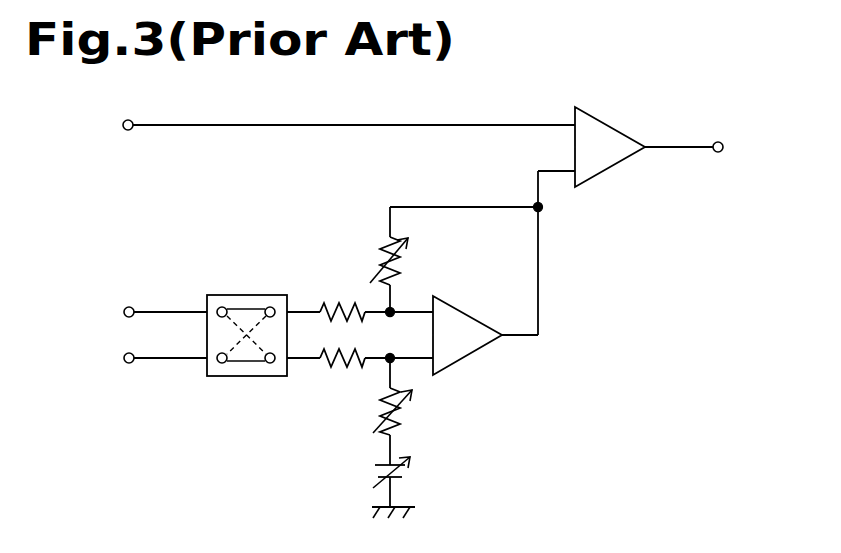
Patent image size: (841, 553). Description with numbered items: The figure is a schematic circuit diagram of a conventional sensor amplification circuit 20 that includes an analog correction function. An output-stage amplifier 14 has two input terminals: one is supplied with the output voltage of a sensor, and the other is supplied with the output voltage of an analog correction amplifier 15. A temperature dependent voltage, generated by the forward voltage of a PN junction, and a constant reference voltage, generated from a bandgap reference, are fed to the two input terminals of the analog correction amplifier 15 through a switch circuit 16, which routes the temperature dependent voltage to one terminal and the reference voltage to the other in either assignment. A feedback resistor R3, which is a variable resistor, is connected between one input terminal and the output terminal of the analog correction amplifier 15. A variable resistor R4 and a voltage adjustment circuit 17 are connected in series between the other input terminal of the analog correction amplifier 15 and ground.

The output-stage amplifier 14 is at (600, 119).
The analog correction amplifier 15 is at (467, 309).
The switch circuit 16 is at (243, 295).
The voltage adjustment circuit 17 is at (405, 460).
The sensor amplification circuit 20 is at (665, 255).
The feedback resistor R3 is at (405, 268).
The variable resistor R4 is at (407, 420).